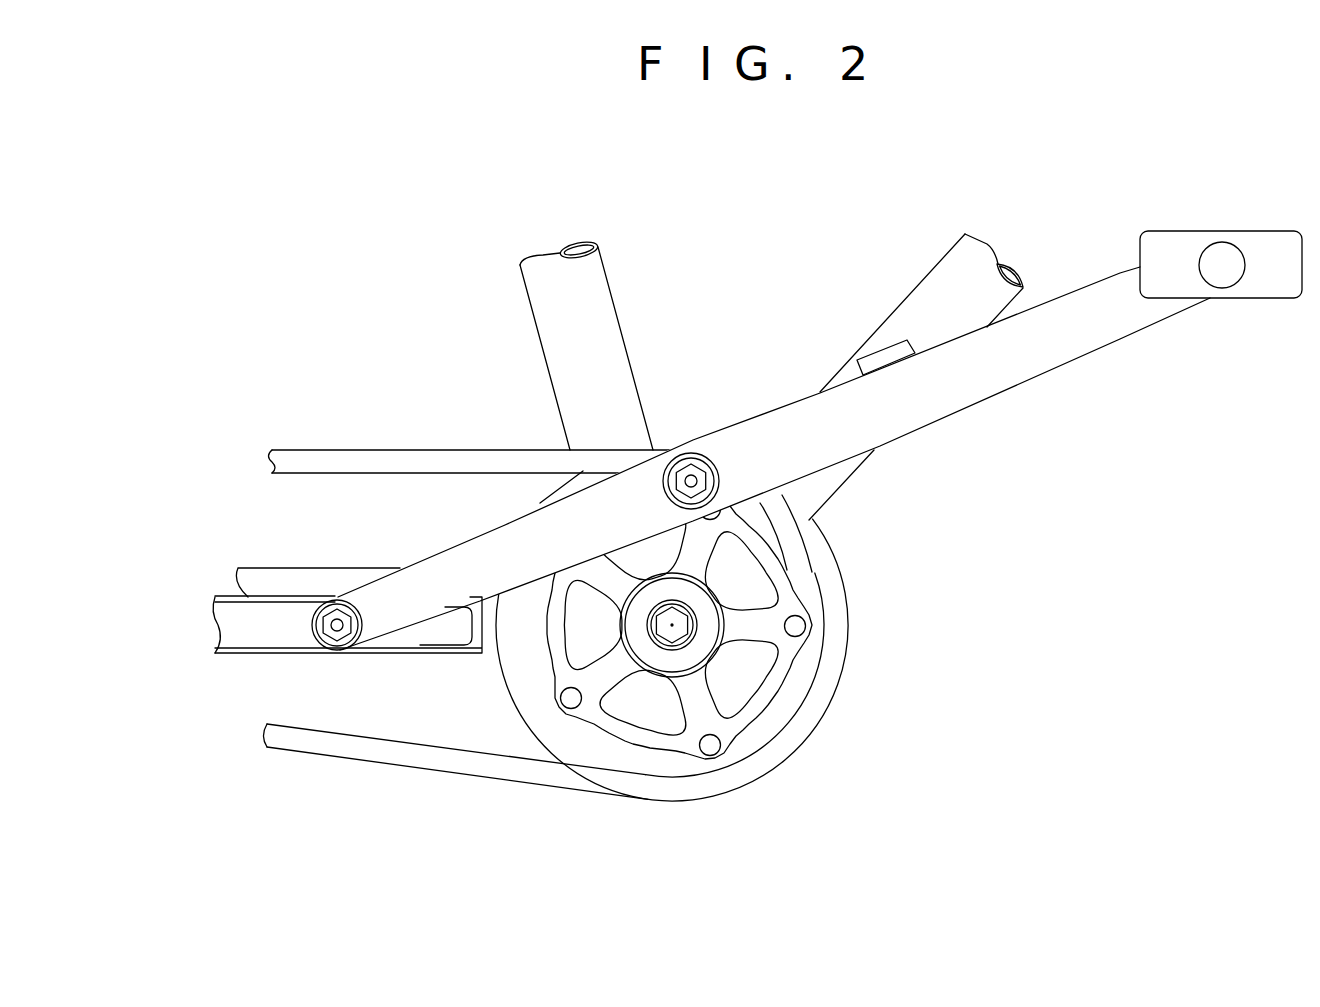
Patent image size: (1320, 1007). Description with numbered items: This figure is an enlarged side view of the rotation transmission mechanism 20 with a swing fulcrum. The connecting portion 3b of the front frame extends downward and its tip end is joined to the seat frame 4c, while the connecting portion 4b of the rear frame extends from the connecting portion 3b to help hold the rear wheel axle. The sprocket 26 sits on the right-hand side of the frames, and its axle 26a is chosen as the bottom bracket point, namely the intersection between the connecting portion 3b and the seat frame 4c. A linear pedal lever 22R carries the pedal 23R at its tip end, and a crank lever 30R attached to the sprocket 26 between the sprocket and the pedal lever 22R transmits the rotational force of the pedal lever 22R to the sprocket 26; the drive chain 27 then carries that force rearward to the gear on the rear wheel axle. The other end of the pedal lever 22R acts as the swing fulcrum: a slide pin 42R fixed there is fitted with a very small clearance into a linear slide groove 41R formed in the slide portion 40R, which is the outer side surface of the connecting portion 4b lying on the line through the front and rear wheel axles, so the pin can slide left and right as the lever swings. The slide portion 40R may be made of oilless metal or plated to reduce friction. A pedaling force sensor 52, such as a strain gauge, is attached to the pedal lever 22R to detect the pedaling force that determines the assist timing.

The wheel 20 is at (852, 673).
The pedal lever 22R is at (1045, 365).
The pedal 23R is at (1260, 288).
The sprocket 26 is at (590, 748).
The axle of the sprocket 26a is at (676, 633).
The drive chain 27 is at (425, 762).
The crank lever 30R is at (697, 551).
The connecting portion 3b is at (937, 283).
The slide portion 40R is at (273, 610).
The slide groove 41R is at (262, 640).
The slide pin 42R is at (342, 650).
The connecting portion 4b is at (353, 568).
The seat frame 4c is at (542, 320).
The pedaling force sensor 52 is at (887, 358).